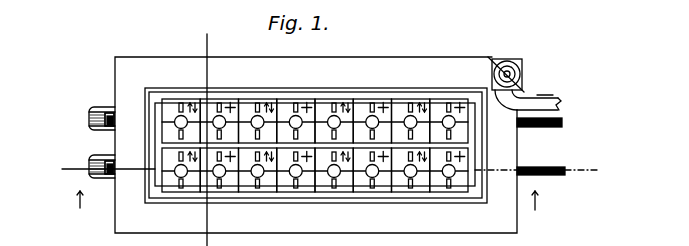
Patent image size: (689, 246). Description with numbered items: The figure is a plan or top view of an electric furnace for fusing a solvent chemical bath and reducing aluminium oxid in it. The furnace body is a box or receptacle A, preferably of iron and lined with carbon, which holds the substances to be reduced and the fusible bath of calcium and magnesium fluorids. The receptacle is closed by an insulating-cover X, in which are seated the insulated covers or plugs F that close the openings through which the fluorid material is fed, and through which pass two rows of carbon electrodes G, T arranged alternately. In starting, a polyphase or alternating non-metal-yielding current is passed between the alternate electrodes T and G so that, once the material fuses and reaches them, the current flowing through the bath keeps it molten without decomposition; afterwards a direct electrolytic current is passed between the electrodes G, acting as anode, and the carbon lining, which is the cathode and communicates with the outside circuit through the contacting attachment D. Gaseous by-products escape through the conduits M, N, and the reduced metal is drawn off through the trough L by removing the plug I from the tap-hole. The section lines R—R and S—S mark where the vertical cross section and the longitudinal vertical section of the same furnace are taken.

The box or receptacle A is at (115, 231).
The insulating-cover X is at (157, 178).
The electrode T is at (179, 115).
The electrode G is at (293, 116).
The insulated cover or plug F is at (337, 116).
The section line R— R is at (203, 131).
The contacting attachment D is at (523, 74).
The conduit M is at (562, 126).
The conduit N is at (565, 170).
The section line S— S is at (327, 171).
The trough L is at (89, 116).
The plug I is at (111, 127).